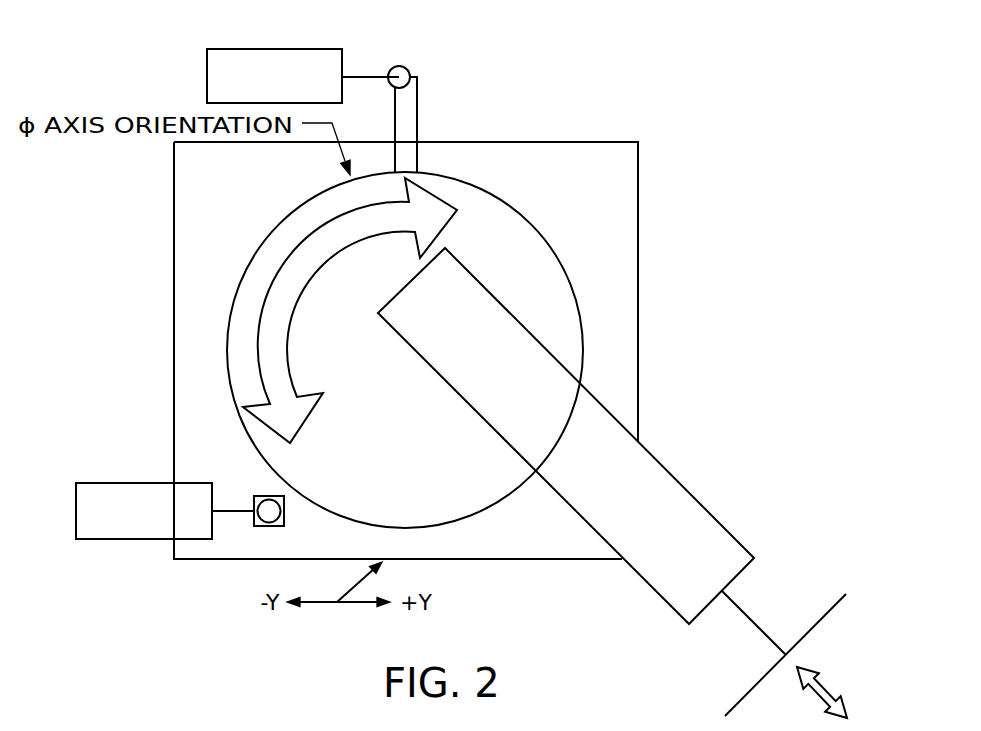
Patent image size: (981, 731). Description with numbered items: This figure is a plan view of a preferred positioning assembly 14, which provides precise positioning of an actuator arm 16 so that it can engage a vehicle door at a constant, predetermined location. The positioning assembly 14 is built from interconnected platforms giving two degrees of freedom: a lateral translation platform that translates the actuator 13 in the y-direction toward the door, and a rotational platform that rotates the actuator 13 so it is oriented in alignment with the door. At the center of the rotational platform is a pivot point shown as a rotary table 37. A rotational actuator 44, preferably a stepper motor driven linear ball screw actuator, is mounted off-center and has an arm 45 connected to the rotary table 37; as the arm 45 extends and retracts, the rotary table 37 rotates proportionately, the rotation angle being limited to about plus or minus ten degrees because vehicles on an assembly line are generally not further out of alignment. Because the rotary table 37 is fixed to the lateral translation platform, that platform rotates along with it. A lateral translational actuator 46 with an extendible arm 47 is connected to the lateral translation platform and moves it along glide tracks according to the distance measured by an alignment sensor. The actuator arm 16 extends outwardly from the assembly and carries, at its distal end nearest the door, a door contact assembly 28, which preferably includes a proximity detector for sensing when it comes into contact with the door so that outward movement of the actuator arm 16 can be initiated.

The actuator 13 is at (685, 487).
The positioning assembly 14 is at (750, 253).
The actuator arm 16 is at (748, 613).
The door contact assembly 28 is at (823, 619).
The rotary table 37 is at (512, 200).
The rotational actuator 44 is at (237, 49).
The arm 45 is at (367, 77).
The lateral translational actuator 46 is at (113, 540).
The extendible arm 47 is at (237, 511).